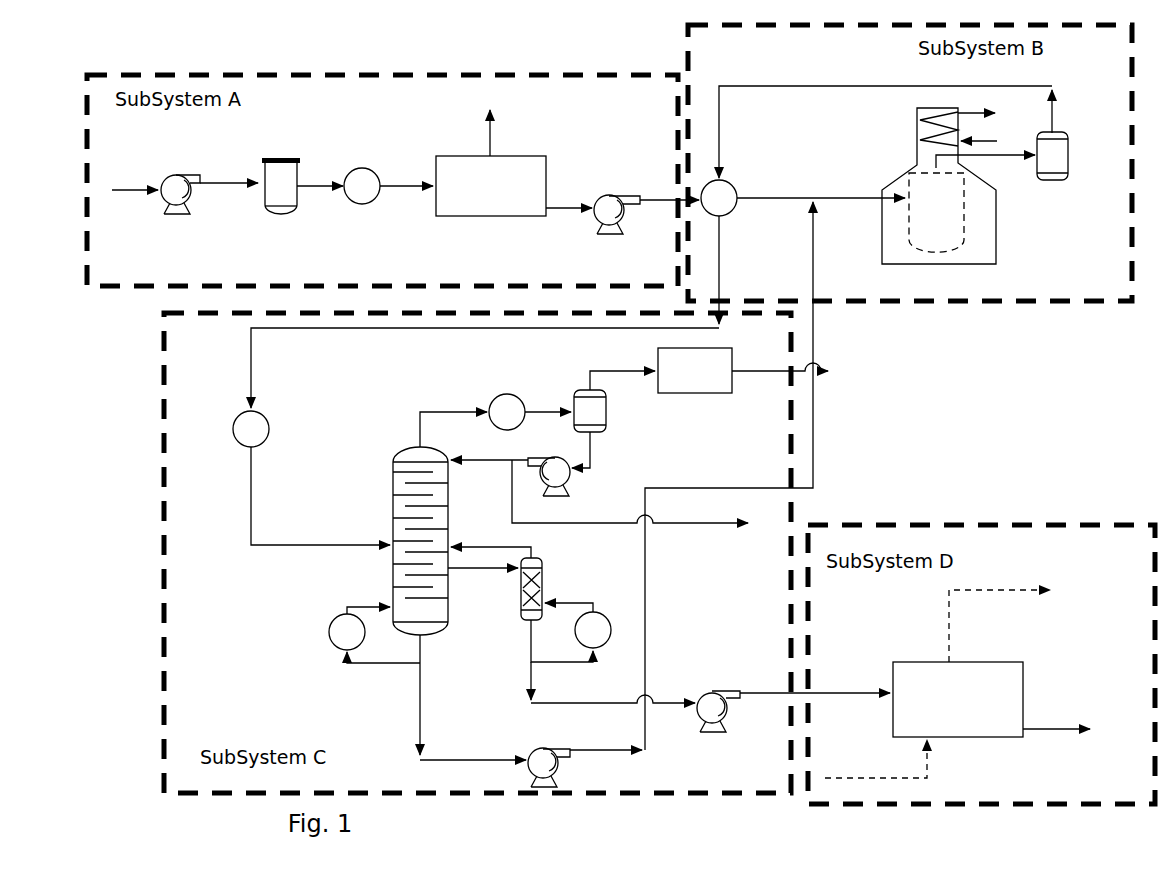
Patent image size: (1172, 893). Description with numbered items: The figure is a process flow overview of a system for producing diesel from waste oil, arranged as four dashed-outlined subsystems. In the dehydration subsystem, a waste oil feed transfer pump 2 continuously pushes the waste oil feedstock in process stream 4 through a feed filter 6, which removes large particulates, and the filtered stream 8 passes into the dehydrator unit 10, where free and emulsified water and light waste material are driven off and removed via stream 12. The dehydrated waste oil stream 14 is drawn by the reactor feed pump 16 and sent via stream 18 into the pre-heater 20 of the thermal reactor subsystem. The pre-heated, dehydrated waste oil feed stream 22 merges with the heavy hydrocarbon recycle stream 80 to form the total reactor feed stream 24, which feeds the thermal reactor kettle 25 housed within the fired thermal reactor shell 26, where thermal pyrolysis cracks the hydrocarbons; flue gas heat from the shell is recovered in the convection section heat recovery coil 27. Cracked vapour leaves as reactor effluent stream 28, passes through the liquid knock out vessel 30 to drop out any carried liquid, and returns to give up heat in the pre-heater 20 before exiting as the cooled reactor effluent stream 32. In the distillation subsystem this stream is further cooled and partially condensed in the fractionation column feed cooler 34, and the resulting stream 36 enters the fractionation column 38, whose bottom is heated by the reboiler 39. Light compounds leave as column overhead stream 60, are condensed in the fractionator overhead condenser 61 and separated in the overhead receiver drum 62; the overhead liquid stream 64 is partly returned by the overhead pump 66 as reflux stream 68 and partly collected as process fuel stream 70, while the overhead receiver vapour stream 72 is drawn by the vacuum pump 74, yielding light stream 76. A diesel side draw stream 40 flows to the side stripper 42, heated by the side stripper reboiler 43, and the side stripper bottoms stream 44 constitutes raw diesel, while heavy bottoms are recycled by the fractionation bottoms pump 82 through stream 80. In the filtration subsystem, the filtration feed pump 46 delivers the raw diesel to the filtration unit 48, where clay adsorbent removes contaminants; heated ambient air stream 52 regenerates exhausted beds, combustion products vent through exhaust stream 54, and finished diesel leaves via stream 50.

The waste oil feed transfer pump 2 is at (173, 175).
The process stream 4 is at (238, 182).
The feed filter 6 is at (283, 160).
The stream 8 is at (405, 177).
The dehydrator unit 10 is at (452, 218).
The stream 12 is at (497, 128).
The dehydrated waste oil stream 14 is at (560, 212).
The reactor feed pump 16 is at (602, 197).
The stream 18 is at (658, 198).
The pre-heater 20 is at (738, 212).
The pre-heated, dehydrated waste oil feed stream 22 is at (760, 196).
The total reactor feed stream 24 is at (858, 196).
The thermal reactor kettle 25 is at (967, 233).
The fired thermal reactor shell 26 is at (997, 257).
The convection section heat recovery coil 27 is at (918, 122).
The reactor effluent stream 28 is at (825, 84).
The liquid knock out vessel 30 is at (1070, 160).
The cooled reactor effluent stream 32 is at (249, 333).
The fractionation column feed cooler 34 is at (238, 418).
The stream 36 is at (300, 548).
The fractionation column 38 is at (392, 503).
The reboiler 39 is at (329, 632).
The diesel side draw stream 40 is at (490, 570).
The side stripper 42 is at (545, 580).
The side stripper reboiler 43 is at (606, 648).
The side stripper bottoms stream 44 is at (528, 678).
The filtration feed pump 46 is at (718, 694).
The filtration unit 48 is at (1028, 672).
The stream 50 is at (1040, 737).
The heated ambient air stream 52 is at (845, 778).
The exhaust stream 54 is at (1015, 590).
The column overhead stream 60 is at (440, 410).
The fractionator overhead condenser 61 is at (495, 397).
The overhead receiver drum 62 is at (608, 412).
The overhead liquid stream 64 is at (595, 465).
The overhead pump 66 is at (565, 490).
The reflux stream 68 is at (465, 470).
The process fuel stream 70 is at (722, 525).
The overhead receiver vapour stream 72 is at (612, 371).
The vacuum pump 74 is at (718, 394).
The stream 76 is at (770, 373).
The heavy hydrocarbon recycle stream 80 is at (815, 262).
The fractionation bottoms pump 82 is at (570, 779).